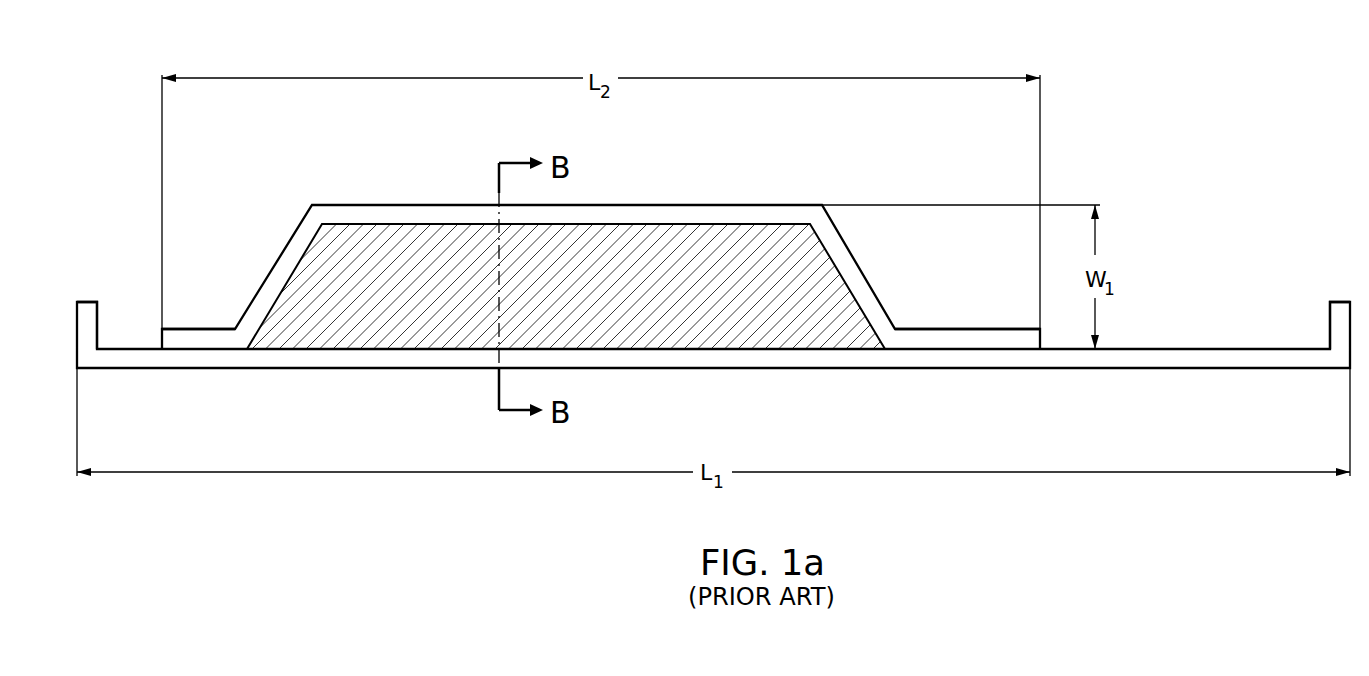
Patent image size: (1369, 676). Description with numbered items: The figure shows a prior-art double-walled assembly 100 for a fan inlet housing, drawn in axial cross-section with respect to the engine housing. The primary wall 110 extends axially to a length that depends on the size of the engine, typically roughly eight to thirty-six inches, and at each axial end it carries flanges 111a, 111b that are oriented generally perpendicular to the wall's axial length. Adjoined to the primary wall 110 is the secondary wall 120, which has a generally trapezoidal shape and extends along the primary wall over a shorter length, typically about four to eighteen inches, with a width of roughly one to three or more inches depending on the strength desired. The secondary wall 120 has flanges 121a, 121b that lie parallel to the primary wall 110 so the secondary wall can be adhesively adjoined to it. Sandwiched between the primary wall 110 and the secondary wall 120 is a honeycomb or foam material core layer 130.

The double-walled assembly 100 is at (1142, 124).
The primary wall 110 is at (975, 357).
The flange 111a is at (86, 307).
The flange 111b is at (1340, 306).
The secondary wall 120 is at (795, 213).
The flange 121a is at (199, 336).
The flange 121b is at (987, 335).
The core layer 130 is at (698, 229).